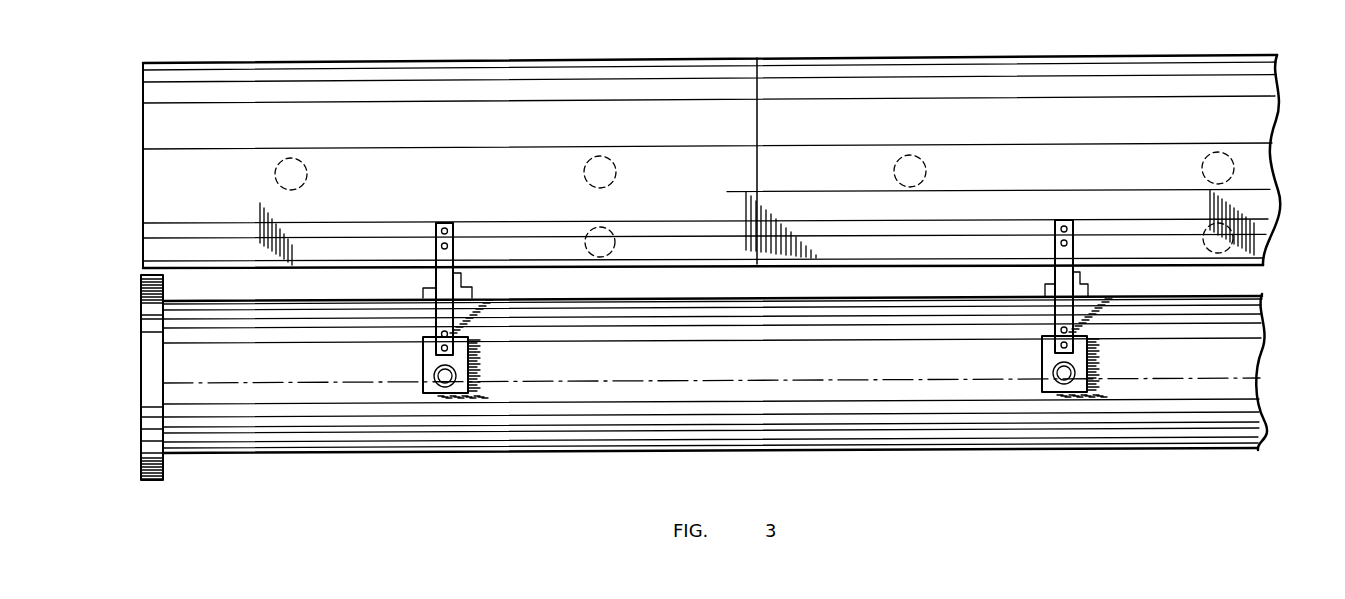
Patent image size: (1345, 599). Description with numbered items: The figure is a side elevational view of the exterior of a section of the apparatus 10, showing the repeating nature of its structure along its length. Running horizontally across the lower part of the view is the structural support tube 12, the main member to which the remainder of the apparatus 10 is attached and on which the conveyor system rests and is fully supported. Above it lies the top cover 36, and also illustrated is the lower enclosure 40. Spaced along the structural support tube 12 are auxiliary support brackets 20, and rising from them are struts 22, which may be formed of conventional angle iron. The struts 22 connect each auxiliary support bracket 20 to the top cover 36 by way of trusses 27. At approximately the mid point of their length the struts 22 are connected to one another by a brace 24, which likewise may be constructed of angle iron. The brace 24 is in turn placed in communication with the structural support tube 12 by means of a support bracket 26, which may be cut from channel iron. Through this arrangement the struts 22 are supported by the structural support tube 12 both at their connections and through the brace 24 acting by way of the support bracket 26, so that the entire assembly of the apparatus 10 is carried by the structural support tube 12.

The apparatus 10 is at (1276, 302).
The structural support tube 12 is at (767, 419).
The auxiliary support bracket 20 is at (423, 355).
The strut 22 is at (445, 280).
The brace 24 is at (455, 279).
The support bracket 26 is at (472, 294).
The truss 27 is at (160, 232).
The top cover 36 is at (677, 161).
The lower enclosure 40 is at (943, 240).